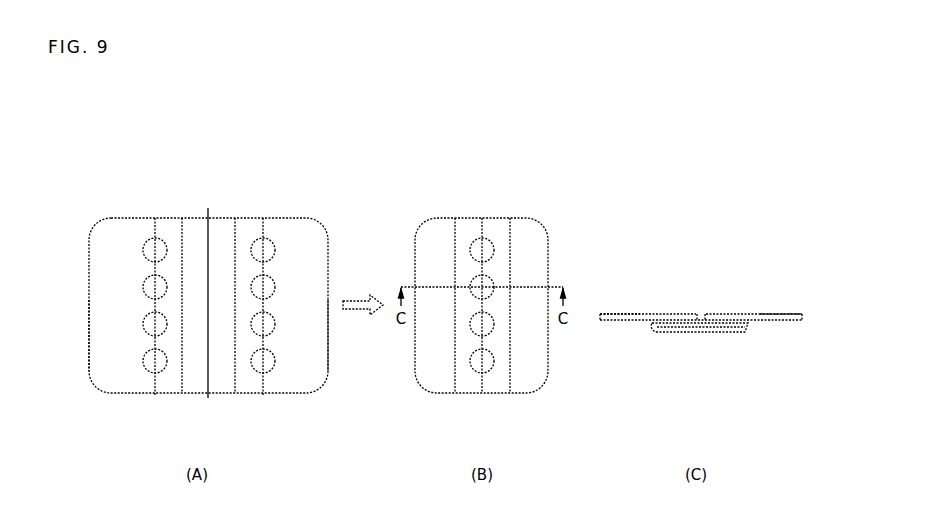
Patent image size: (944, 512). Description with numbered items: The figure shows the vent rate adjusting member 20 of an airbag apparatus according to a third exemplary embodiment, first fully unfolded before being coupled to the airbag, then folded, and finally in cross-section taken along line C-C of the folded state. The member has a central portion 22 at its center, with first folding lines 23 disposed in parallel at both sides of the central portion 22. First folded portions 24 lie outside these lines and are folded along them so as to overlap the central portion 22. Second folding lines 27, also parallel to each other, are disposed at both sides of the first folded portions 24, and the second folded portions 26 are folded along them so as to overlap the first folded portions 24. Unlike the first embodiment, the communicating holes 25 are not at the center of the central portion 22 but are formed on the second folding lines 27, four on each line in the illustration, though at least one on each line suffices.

The vent rate adjusting member 20 is at (286, 174).
The central portion 22 is at (200, 385).
The first folding line 23 is at (181, 238).
The first folded portion 24 is at (162, 385).
The communicating hole 25 is at (149, 244).
The second folded portion 26 is at (122, 393).
The second folding line 27 is at (155, 240).